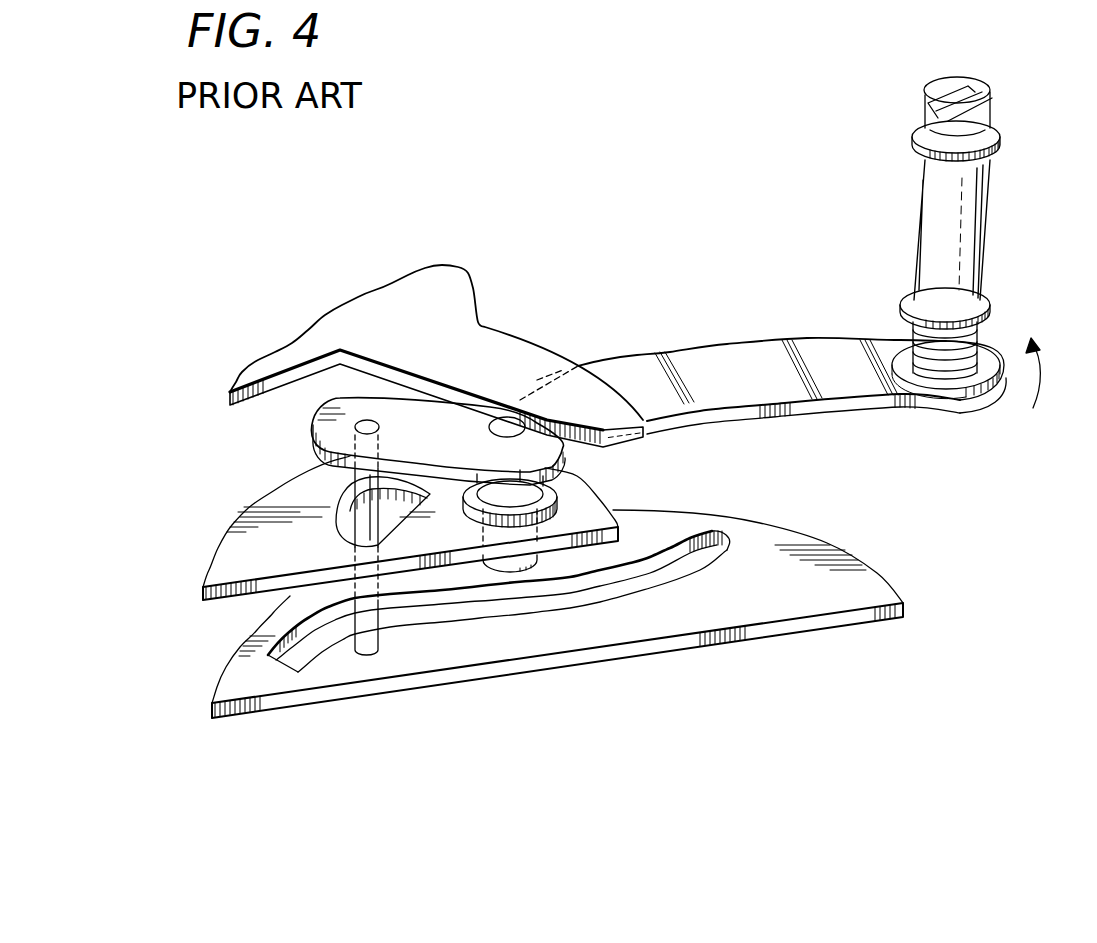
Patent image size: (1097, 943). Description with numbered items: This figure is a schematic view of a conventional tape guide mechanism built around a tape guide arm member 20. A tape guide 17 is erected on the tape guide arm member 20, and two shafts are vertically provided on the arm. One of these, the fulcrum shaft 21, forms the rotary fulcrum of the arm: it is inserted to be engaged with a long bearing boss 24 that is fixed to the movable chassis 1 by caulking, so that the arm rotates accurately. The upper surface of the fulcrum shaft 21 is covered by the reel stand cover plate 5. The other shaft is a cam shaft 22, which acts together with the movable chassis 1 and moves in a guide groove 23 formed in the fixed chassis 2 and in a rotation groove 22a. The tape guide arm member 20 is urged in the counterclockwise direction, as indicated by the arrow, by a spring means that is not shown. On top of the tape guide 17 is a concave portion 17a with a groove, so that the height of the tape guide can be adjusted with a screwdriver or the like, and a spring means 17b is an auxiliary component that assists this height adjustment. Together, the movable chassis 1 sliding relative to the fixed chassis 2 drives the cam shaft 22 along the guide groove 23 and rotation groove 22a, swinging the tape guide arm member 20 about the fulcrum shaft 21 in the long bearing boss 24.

The movable chassis 1 is at (225, 552).
The fixed chassis 2 is at (237, 672).
The reel stand cover plate 5 is at (350, 325).
The tape guide 17 is at (994, 201).
The concave portion 17a is at (954, 88).
The spring means 17b is at (983, 331).
The tape guide arm member 20 is at (732, 340).
The fulcrum shaft 21 is at (510, 424).
The cam shaft 22 is at (363, 483).
The rotation groove 22a is at (338, 514).
The guide groove 23 is at (677, 574).
The long bearing boss 24 is at (560, 481).